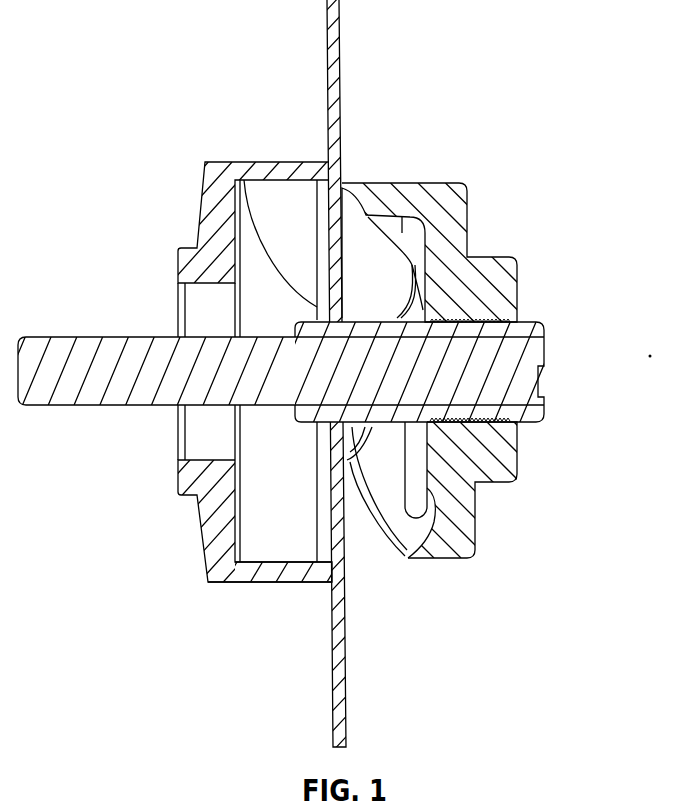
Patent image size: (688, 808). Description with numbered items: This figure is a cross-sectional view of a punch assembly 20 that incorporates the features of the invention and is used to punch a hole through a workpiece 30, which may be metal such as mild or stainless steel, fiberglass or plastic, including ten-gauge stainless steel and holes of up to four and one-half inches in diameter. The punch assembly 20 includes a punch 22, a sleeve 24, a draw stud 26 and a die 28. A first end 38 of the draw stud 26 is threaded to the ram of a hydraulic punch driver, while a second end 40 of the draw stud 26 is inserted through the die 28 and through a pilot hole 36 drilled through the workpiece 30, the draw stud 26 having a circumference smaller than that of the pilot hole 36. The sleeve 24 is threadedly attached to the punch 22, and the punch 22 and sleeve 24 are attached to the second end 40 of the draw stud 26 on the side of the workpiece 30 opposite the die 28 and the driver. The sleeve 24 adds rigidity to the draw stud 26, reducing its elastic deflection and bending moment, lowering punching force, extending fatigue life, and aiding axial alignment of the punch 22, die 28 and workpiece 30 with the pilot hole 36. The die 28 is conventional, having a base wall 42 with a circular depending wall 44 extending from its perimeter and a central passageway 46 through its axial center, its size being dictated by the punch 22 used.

The punch assembly 20 is at (527, 518).
The punch 22 is at (468, 200).
The sleeve 24 is at (528, 320).
The draw stud 26 is at (88, 405).
The die 28 is at (271, 583).
The workpiece 30 is at (343, 57).
The pilot hole 36 is at (244, 162).
The first end 38 is at (58, 343).
The second end 40 is at (512, 358).
The base wall 42 is at (208, 507).
The circular depending wall 44 is at (270, 160).
The central passageway 46 is at (199, 290).